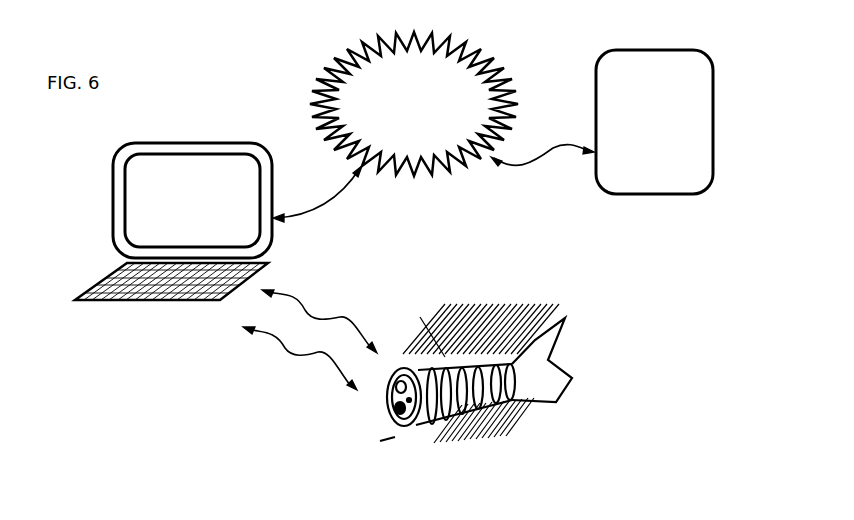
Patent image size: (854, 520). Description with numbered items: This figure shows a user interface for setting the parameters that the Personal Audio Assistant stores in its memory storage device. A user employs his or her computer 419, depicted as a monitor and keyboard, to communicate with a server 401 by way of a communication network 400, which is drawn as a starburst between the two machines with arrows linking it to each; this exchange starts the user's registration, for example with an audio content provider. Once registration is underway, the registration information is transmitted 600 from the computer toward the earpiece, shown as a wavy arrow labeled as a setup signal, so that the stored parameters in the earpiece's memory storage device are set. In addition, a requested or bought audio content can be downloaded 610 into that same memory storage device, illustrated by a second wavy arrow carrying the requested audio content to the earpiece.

The communication network 400 is at (364, 62).
The server 401 is at (648, 50).
The computer 419 is at (113, 195).
The transmission of registration information 600 is at (292, 357).
The download of requested audio content 610 is at (305, 316).